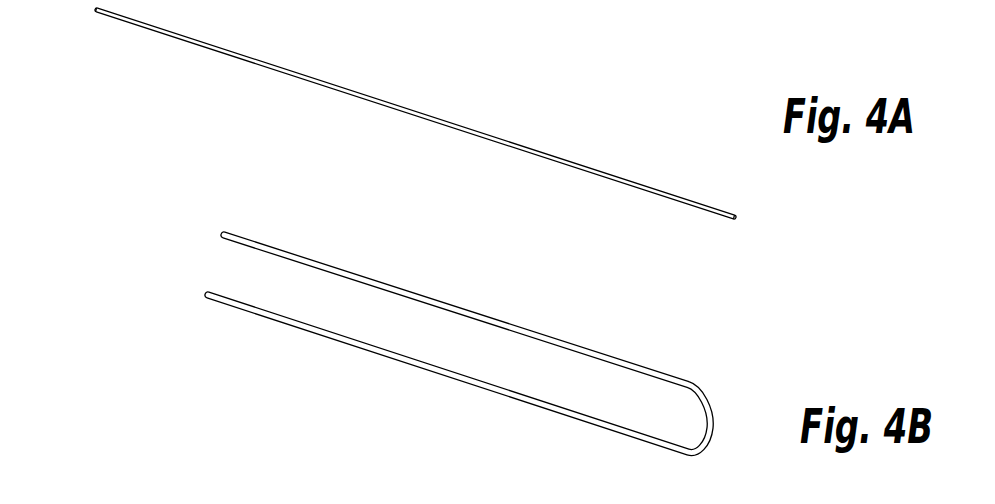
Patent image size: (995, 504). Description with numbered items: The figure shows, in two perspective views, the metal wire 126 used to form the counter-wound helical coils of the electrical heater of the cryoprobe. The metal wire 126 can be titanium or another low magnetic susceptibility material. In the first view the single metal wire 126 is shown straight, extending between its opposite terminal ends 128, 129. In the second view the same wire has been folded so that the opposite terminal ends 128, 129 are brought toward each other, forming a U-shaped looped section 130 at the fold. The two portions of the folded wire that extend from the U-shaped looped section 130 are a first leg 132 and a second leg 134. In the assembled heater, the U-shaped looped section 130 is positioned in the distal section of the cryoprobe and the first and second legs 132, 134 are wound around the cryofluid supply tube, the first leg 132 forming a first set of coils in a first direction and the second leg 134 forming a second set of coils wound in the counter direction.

In FIG. 4A, the metal wire 126 is at (441, 121).
In FIG. 4B, the metal wire 126 is at (550, 300).
In FIG. 4A, the terminal end 128 is at (737, 217).
In FIG. 4B, the terminal end 128 is at (222, 233).
In FIG. 4A, the terminal end 129 is at (95, 12).
In FIG. 4B, the terminal end 129 is at (206, 298).
In FIG. 4B, the U-shaped looped section 130 is at (733, 400).
In FIG. 4B, the first leg 132 is at (450, 300).
In FIG. 4B, the second leg 134 is at (490, 388).